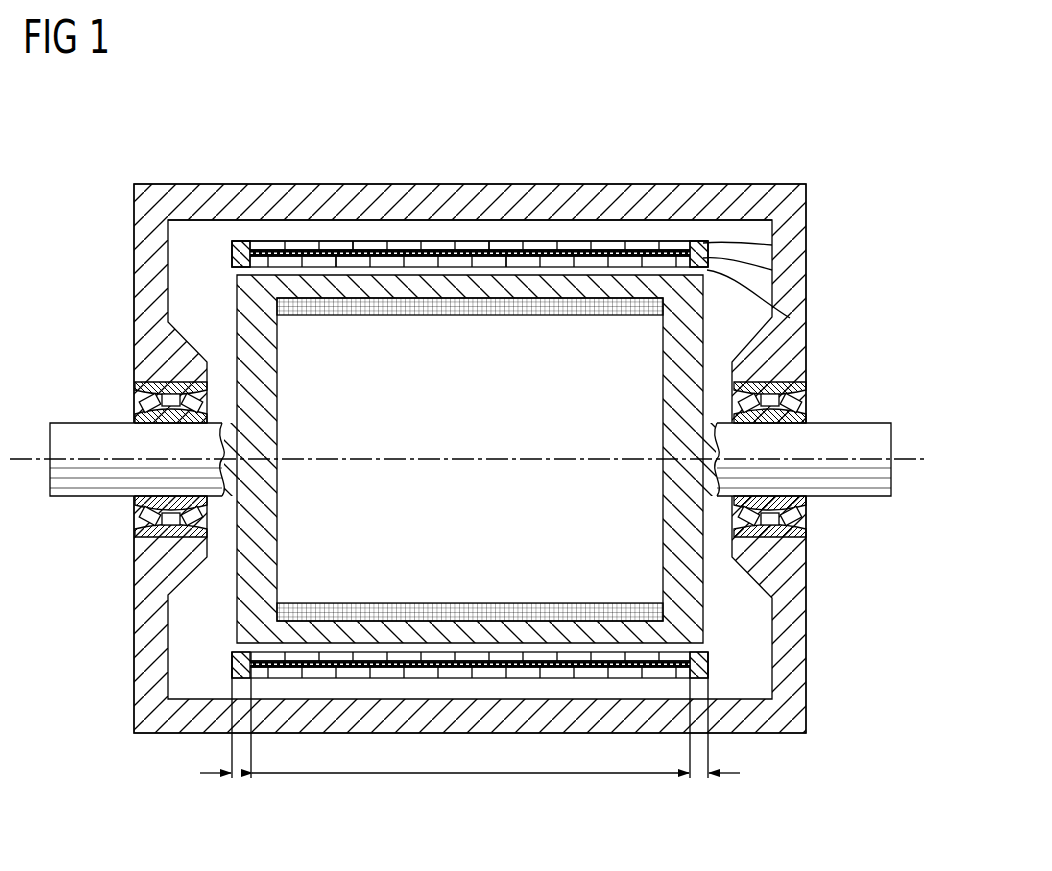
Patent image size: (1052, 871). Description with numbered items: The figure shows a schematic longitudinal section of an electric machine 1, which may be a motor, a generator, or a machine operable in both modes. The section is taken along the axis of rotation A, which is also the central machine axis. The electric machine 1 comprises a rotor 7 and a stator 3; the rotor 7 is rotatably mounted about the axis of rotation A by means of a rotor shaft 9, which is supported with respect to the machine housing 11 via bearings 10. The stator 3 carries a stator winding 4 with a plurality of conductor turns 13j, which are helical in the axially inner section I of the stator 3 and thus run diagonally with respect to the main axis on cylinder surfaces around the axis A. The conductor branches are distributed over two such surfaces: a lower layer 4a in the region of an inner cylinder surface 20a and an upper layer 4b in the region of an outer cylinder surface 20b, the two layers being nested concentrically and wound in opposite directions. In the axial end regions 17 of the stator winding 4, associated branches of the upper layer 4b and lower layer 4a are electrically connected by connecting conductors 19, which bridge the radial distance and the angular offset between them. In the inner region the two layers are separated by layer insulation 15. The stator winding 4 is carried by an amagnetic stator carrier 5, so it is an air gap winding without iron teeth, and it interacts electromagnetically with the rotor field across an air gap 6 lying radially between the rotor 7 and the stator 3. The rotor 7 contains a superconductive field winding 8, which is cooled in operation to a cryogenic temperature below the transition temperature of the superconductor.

The electric machine 1 is at (110, 225).
The stator 3 is at (441, 222).
The stator winding 4 is at (712, 653).
The lower layer 4a is at (320, 262).
The upper layer 4b is at (578, 246).
The amagnetic stator carrier 5 is at (612, 228).
The air gap 6 is at (790, 318).
The rotor 7 is at (248, 596).
The superconductive field winding 8 is at (492, 612).
The rotor shaft 9 is at (75, 432).
The bearings 10 is at (138, 531).
The machine housing 11 is at (218, 196).
The conductor turns 13j is at (368, 262).
The layer insulation 15 is at (669, 254).
The axial end regions 17 is at (243, 778).
The connecting conductors 19 is at (702, 242).
The inner cylinder surface 20a is at (772, 270).
The outer cylinder surface 20b is at (772, 245).
The axis of rotation A is at (915, 463).
The axially inner section I is at (488, 778).